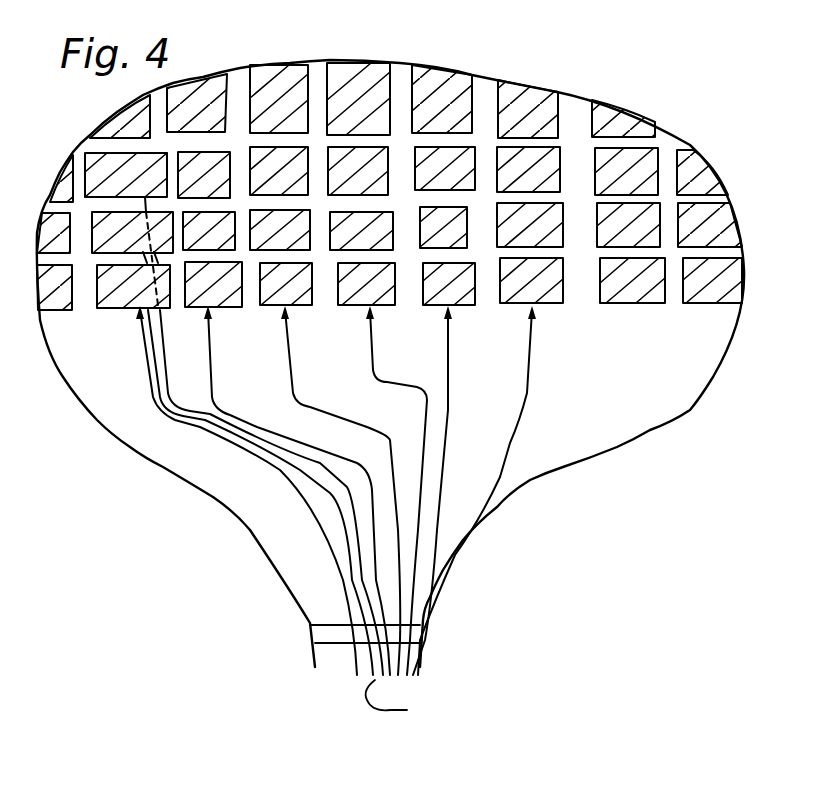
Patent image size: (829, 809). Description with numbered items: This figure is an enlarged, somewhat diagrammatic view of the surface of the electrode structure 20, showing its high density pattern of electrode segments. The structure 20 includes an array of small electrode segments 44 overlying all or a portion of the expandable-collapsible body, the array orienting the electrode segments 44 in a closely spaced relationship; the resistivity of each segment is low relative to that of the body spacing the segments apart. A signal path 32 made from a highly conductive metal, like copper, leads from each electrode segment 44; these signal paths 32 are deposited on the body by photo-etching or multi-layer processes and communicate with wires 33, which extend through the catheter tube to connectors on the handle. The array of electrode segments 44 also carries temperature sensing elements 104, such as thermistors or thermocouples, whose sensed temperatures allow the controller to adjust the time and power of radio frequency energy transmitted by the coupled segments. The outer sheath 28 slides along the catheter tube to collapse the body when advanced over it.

The electrode structure 20 is at (714, 140).
The outer sheath 28 is at (637, 405).
The signal path 32 is at (372, 353).
The wires 33 is at (397, 683).
The electrode segments 44 is at (428, 85).
The temperature sensing elements 104 is at (195, 108).